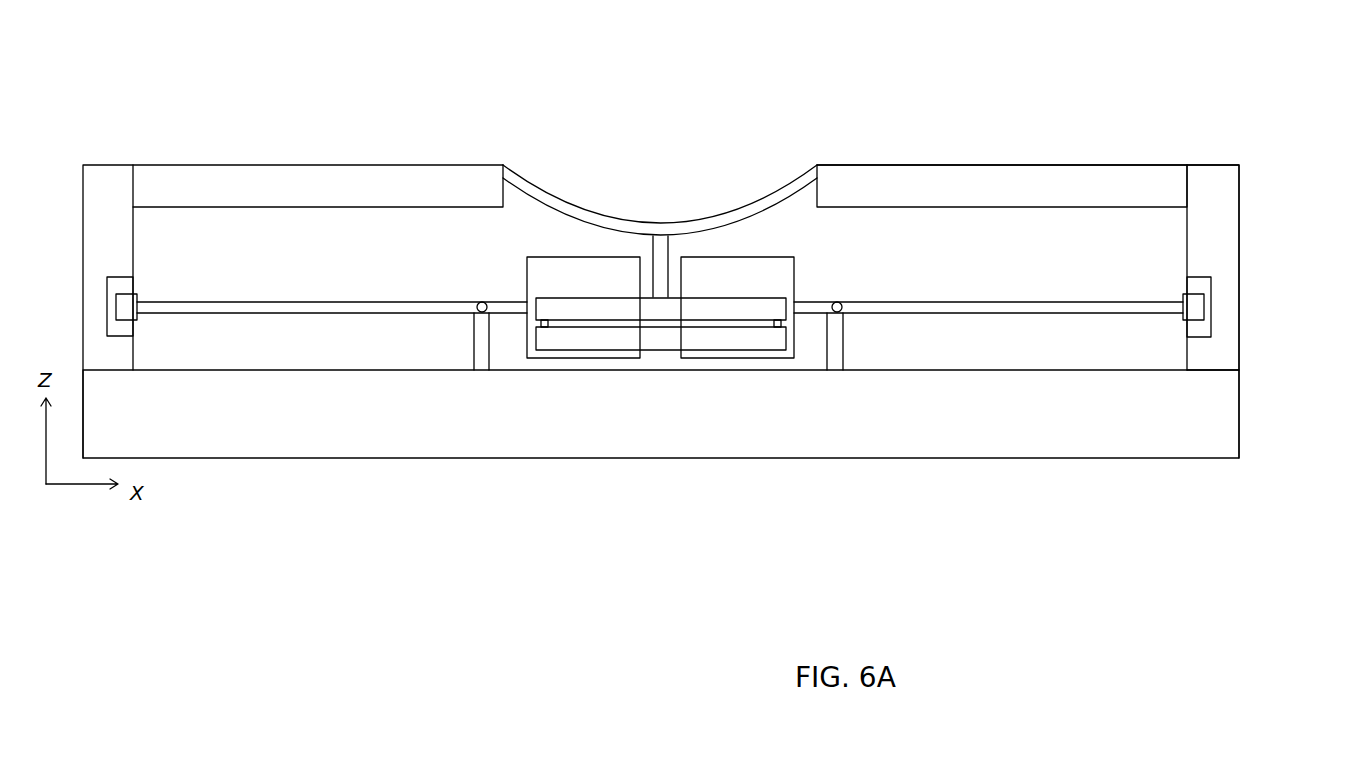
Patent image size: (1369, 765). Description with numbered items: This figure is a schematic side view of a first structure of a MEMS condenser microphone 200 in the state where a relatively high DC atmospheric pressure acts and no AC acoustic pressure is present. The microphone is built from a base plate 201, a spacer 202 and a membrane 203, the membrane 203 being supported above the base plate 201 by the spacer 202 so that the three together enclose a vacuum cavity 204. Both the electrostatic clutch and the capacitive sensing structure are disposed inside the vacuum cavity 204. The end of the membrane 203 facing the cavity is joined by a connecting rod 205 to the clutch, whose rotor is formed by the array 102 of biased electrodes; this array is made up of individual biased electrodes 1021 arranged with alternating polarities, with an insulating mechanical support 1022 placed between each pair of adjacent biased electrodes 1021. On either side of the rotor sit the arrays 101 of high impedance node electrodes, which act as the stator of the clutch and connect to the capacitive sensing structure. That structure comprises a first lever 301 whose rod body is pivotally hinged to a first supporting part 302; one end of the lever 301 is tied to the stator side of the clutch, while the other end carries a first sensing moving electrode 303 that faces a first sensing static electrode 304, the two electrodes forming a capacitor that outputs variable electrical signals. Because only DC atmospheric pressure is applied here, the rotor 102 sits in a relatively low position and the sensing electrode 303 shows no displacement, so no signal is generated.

The MEMS condenser microphone 200 is at (1085, 125).
The base plate 201 is at (958, 420).
The spacer 202 is at (1200, 352).
The membrane 203 is at (730, 192).
The vacuum cavity 204 is at (1157, 253).
The connecting rod 205 is at (650, 250).
The first lever 301 is at (1083, 305).
The first supporting part 302 is at (839, 312).
The first sensing moving electrode 303 is at (1192, 307).
The first sensing static electrode 304 is at (1212, 283).
The array of high impedance nodes electrodes 101 is at (715, 360).
The array of biased electrodes 102 is at (557, 330).
The biased electrode 1021 is at (553, 305).
The insulating mechanical support 1022 is at (543, 327).